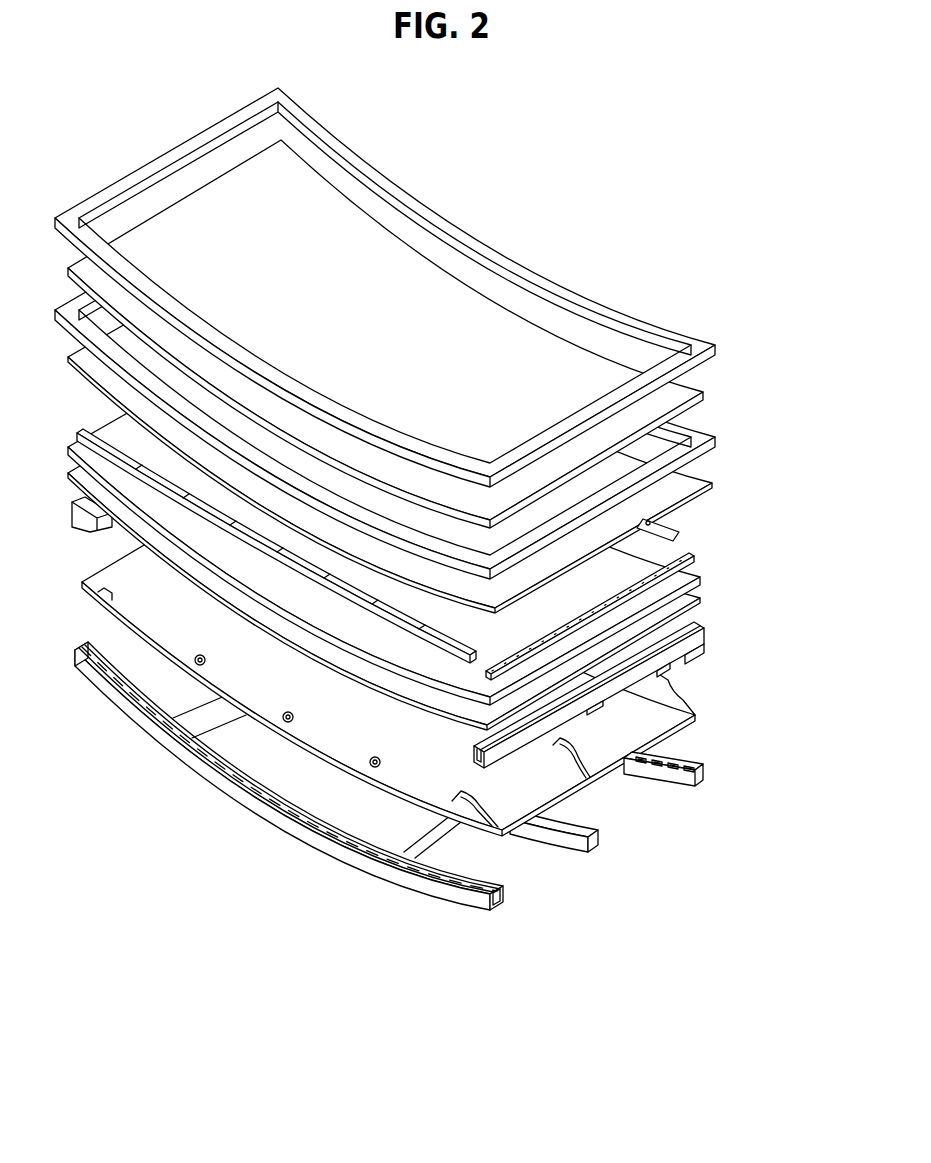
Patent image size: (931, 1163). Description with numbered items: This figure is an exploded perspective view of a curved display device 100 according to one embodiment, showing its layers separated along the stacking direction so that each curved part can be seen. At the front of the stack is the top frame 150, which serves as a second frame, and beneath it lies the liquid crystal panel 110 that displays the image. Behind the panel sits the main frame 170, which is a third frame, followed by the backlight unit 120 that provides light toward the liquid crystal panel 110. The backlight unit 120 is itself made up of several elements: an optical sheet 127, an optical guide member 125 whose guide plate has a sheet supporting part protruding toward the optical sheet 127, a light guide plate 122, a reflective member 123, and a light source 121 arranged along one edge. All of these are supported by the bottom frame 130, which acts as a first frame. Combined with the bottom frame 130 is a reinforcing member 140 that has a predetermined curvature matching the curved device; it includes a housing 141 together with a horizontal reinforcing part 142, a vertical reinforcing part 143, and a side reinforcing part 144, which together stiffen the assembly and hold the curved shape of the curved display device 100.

The curved display device 100 is at (503, 84).
The liquid crystal panel 110 is at (705, 392).
The backlight unit 120 is at (449, 552).
The light source 121 is at (674, 758).
The light guide plate 122 is at (700, 578).
The reflective member 123 is at (700, 600).
The optical guide member 125 is at (690, 537).
The optical sheet 127 is at (713, 484).
The bottom frame 130 is at (597, 745).
The reinforcing member 140 is at (400, 801).
The housing 141 is at (505, 898).
The horizontal reinforcing part 142 is at (594, 847).
The vertical reinforcing part 143 is at (452, 848).
The side reinforcing part 144 is at (530, 738).
The top frame 150 is at (718, 346).
The main frame 170 is at (718, 438).